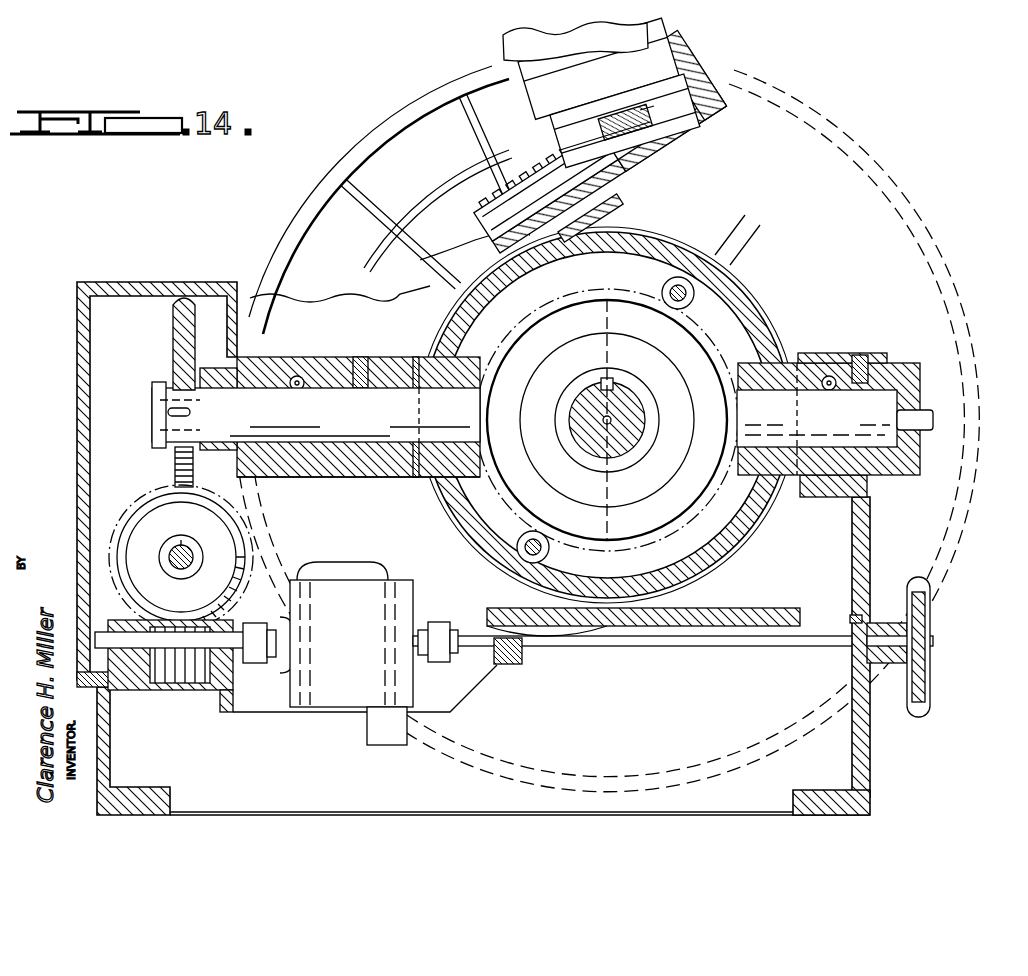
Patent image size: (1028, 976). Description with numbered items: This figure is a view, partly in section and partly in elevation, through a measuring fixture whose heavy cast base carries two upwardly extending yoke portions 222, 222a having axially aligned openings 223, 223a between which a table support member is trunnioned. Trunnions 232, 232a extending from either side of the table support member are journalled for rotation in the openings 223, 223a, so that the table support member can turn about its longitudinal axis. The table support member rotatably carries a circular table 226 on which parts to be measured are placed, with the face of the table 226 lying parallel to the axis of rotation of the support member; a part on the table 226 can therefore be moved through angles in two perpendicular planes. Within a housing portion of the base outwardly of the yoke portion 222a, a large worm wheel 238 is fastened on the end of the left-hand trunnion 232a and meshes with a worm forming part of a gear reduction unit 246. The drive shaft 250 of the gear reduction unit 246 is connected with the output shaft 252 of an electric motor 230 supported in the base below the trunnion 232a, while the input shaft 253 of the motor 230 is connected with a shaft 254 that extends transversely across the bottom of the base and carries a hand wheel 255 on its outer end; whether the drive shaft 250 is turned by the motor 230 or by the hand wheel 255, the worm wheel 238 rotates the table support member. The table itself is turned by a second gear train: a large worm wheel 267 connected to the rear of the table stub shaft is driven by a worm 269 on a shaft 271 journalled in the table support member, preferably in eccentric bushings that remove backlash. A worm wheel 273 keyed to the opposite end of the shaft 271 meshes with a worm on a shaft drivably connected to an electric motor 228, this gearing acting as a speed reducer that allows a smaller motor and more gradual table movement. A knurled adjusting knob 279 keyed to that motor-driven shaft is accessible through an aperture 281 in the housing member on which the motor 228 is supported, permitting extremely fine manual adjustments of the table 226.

The yoke portion 222 is at (874, 478).
The yoke portion 222a is at (358, 343).
The opening 223 is at (800, 450).
The opening 223a is at (329, 448).
The circular table 226 is at (326, 175).
The electric motor 228 is at (521, 66).
The electric motor 230 is at (350, 702).
The trunnion 232 is at (890, 360).
The trunnion 232a is at (364, 420).
The worm wheel 238 is at (180, 341).
The gear reduction unit 246 is at (130, 507).
The drive shaft 250 is at (239, 670).
The output shaft 252 is at (300, 612).
The input shaft 253 is at (414, 668).
The shaft 254 is at (484, 666).
The hand wheel 255 is at (905, 690).
The worm wheel 267 is at (648, 521).
The worm 269 is at (505, 285).
The shaft 271 is at (596, 152).
The worm wheel 273 is at (692, 157).
The knurled adjusting knob 279 is at (627, 137).
The aperture 281 is at (661, 128).